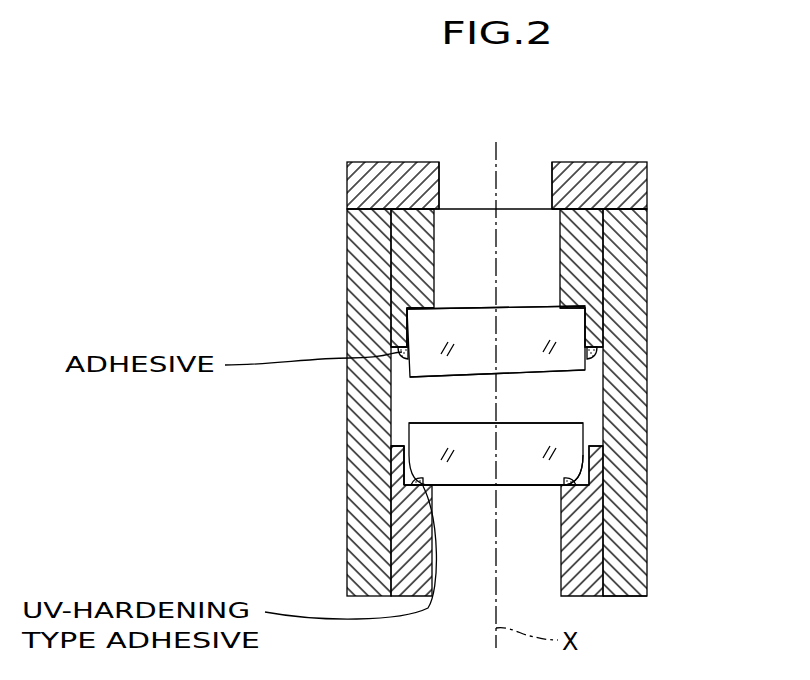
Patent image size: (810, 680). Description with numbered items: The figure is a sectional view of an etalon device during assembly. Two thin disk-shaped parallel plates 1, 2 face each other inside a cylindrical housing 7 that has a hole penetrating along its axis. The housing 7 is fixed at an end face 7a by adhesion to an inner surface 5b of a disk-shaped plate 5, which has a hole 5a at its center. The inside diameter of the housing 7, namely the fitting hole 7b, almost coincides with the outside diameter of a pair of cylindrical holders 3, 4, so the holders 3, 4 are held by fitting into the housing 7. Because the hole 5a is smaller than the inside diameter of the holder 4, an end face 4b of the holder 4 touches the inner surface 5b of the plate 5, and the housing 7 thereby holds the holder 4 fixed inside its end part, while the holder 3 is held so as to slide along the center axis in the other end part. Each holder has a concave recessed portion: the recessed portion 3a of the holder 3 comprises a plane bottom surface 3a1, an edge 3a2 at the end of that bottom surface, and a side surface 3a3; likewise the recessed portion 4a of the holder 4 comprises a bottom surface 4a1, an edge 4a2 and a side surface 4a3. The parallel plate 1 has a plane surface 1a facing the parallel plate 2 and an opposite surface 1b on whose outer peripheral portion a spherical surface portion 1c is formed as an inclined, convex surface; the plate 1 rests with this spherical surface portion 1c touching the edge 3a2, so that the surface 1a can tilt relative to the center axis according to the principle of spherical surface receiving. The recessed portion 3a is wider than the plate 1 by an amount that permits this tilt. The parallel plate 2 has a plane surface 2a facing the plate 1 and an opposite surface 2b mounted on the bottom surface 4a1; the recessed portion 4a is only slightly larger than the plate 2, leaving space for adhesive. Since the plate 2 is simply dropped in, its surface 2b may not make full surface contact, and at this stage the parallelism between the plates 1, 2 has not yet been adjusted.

The parallel plate 1 is at (575, 468).
The surface of parallel plate 1a is at (563, 448).
The surface of parallel plate 1b is at (520, 490).
The spherical surface portion 1c is at (570, 478).
The parallel plate 2 is at (557, 327).
The surface of parallel plate 2a is at (533, 373).
The surface of parallel plate 2b is at (540, 306).
The holder 3 is at (412, 540).
The recessed portion 3a is at (417, 473).
The bottom surface 3a1 is at (407, 490).
The edge 3a2 is at (435, 487).
The side surface 3a3 is at (407, 472).
The holder 4 is at (397, 235).
The recessed portion 4a is at (437, 320).
The bottom surface 4a1 is at (412, 312).
The edge 4a2 is at (435, 306).
The side surface 4a3 is at (396, 348).
The end face 4b is at (413, 207).
The plate 5 is at (635, 175).
The hole 5a is at (522, 178).
The inner surface 5b is at (578, 212).
The housing 7 is at (627, 552).
The end face 7a is at (647, 223).
The fitting hole 7b is at (595, 578).